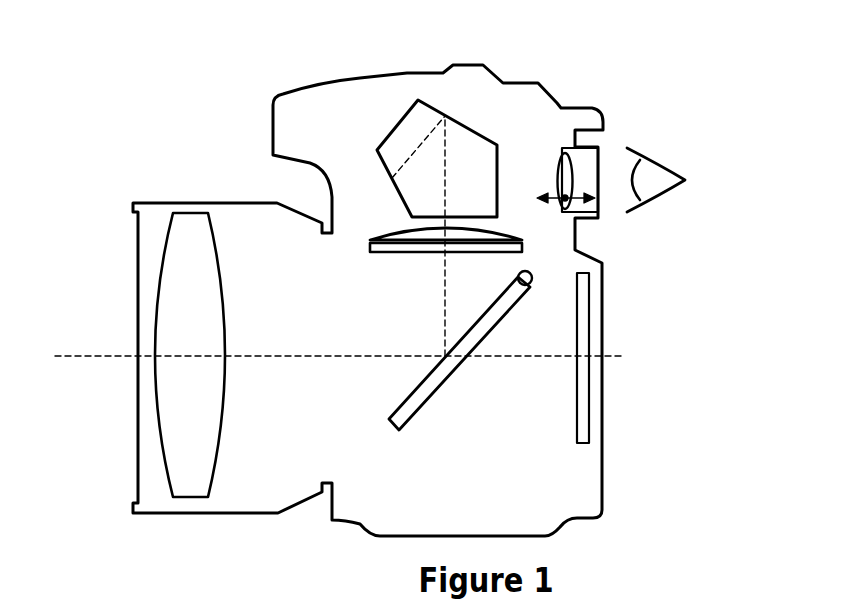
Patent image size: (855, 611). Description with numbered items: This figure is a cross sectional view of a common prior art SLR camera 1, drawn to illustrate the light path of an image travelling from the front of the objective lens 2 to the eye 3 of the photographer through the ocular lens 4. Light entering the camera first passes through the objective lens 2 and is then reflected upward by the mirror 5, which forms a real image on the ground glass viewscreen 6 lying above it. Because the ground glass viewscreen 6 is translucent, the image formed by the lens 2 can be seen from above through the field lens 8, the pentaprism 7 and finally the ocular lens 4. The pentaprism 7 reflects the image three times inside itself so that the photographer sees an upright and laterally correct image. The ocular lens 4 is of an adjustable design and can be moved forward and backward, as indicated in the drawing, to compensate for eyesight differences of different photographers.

The SLR camera 1 is at (333, 122).
The objective lens 2 is at (178, 332).
The eye 3 is at (660, 165).
The ocular lens 4 is at (572, 170).
The mirror 5 is at (473, 350).
The ground glass viewscreen 6 is at (523, 250).
The pentaprism 7 is at (457, 138).
The field lens 8 is at (487, 228).